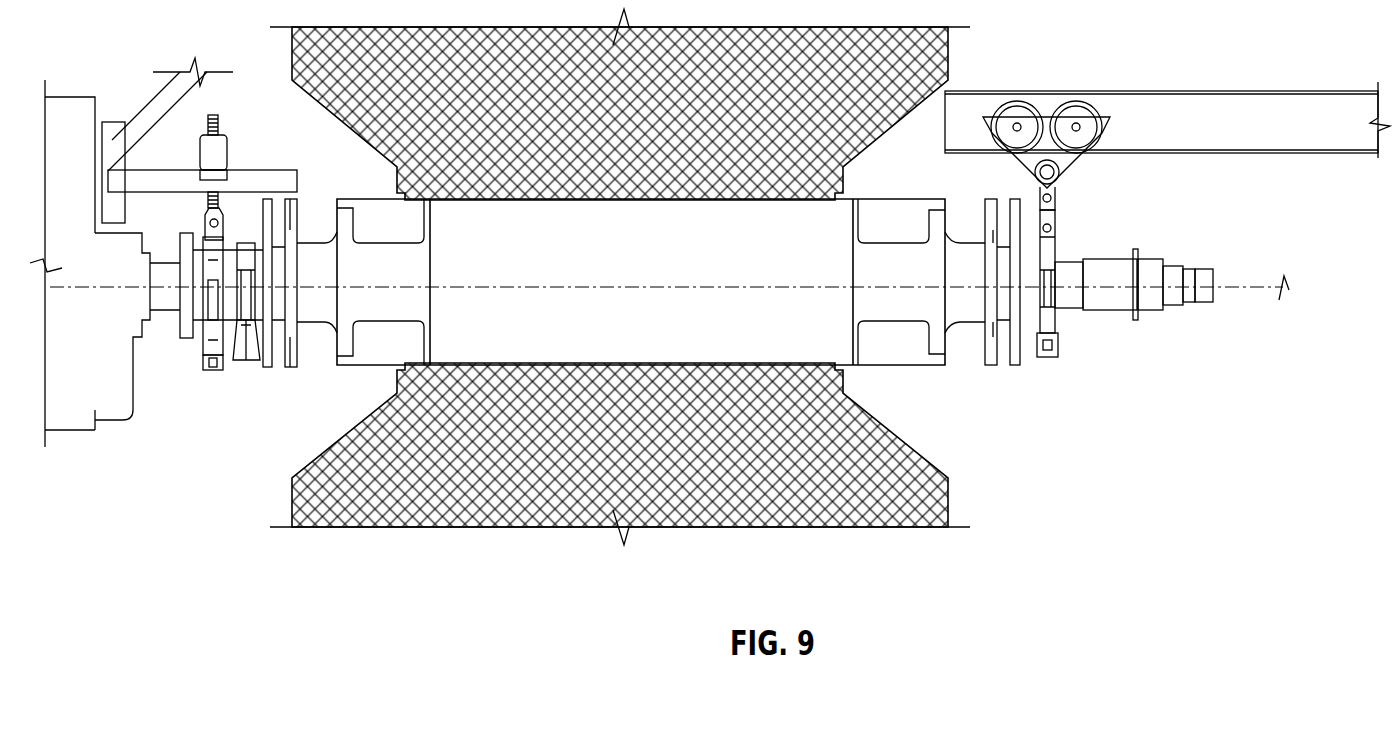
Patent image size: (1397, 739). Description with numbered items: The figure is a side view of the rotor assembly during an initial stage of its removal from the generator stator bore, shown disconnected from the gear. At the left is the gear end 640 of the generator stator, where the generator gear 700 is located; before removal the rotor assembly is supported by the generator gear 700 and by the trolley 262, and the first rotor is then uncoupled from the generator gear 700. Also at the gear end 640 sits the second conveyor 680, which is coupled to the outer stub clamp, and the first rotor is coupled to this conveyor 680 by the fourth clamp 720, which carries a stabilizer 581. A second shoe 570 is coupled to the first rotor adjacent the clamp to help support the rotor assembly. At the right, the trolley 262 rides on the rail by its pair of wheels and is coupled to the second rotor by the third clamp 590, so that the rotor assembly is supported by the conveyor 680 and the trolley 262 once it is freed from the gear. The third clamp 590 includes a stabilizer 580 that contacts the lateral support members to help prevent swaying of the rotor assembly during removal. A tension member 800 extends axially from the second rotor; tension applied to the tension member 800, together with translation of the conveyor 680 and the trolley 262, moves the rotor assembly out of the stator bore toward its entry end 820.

The gear end 640 is at (182, 47).
The second conveyor 680 is at (216, 160).
The generator gear 700 is at (175, 296).
The fourth clamp 720 is at (213, 333).
The second shoe 570 is at (249, 356).
The stabilizer 581 is at (213, 371).
The stabilizer 580 is at (1059, 344).
The third clamp 590 is at (1058, 252).
The trolley 262 is at (1064, 166).
The tension member 800 is at (1243, 298).
The entry end 820 is at (1072, 28).